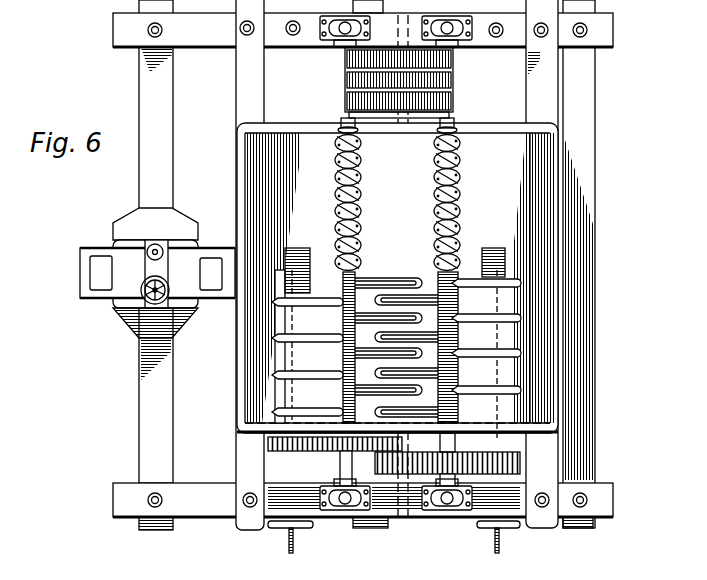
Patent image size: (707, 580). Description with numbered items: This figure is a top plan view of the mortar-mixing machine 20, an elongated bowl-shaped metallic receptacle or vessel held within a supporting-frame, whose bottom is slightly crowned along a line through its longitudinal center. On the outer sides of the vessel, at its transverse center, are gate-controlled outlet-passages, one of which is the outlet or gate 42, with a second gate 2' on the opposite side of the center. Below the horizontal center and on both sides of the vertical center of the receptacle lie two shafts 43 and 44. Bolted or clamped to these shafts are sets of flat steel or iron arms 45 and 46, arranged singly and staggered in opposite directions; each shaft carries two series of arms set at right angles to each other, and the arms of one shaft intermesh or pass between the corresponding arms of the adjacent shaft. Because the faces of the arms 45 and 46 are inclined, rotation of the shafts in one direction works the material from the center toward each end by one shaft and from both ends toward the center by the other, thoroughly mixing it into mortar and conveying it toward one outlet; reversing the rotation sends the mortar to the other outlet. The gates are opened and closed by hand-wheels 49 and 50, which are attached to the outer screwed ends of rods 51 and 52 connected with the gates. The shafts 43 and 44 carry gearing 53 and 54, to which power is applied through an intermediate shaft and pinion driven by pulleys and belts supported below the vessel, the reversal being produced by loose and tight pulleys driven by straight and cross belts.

The guide block 2' is at (303, 270).
The mortar-mixing machine 20 is at (397, 278).
The gate-controlled outlet-passage 42 is at (502, 262).
The shaft 43 is at (456, 120).
The shaft 44 is at (342, 120).
The arms 45 is at (448, 338).
The arms 46 is at (347, 337).
The hand-wheel 49 is at (290, 529).
The hand-wheel 50 is at (492, 529).
The rod 51 is at (302, 546).
The rod 52 is at (509, 547).
The gearing 53 is at (447, 453).
The gearing 54 is at (268, 448).